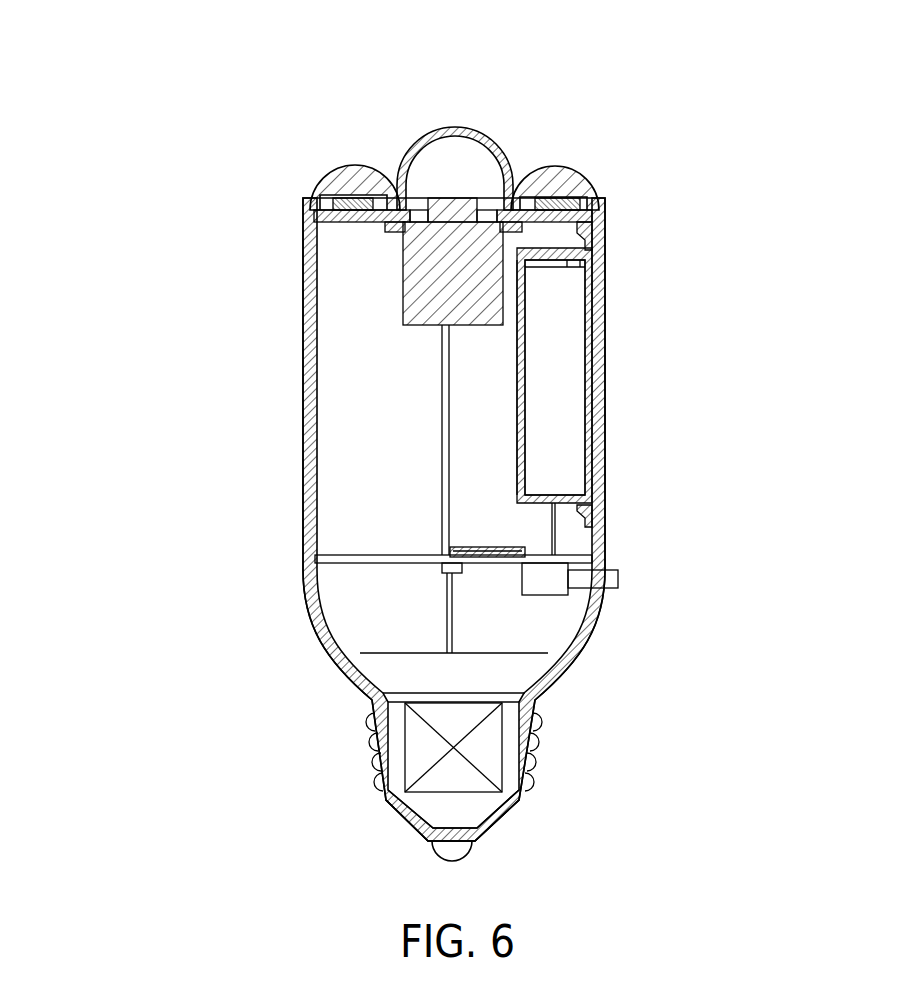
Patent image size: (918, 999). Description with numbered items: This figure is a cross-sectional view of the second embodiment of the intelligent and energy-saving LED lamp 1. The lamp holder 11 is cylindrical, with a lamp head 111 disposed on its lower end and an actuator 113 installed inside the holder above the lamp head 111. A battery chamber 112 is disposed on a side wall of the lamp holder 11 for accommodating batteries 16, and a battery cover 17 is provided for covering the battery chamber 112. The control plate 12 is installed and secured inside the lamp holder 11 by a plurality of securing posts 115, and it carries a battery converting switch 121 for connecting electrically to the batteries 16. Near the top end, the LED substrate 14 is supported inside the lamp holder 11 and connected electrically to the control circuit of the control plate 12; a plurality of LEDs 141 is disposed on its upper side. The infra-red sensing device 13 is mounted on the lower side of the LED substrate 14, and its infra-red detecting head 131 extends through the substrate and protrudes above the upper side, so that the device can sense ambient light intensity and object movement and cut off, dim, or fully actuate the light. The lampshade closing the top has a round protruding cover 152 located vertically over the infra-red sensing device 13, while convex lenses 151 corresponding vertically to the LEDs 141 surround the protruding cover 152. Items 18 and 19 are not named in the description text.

The LED lamp 1 is at (238, 433).
The lamp holder 11 is at (303, 372).
The lamp head 111 is at (485, 838).
The battery chamber 112 is at (513, 407).
The actuator 113 is at (470, 740).
The securing posts 115 is at (322, 578).
The control plate 12 is at (350, 562).
The battery converting switch 121 is at (572, 585).
The infra-red sensing device 13 is at (438, 277).
The infra-red detecting head 131 is at (453, 210).
The LED substrate 14 is at (565, 225).
The LEDs 141 is at (573, 203).
The convex lenses 151 is at (558, 173).
The protruding cover 152 is at (465, 128).
The batteries 16 is at (542, 410).
The battery cover 17 is at (605, 368).
The gap 18 is at (490, 217).
The substrate plate 19 is at (400, 229).